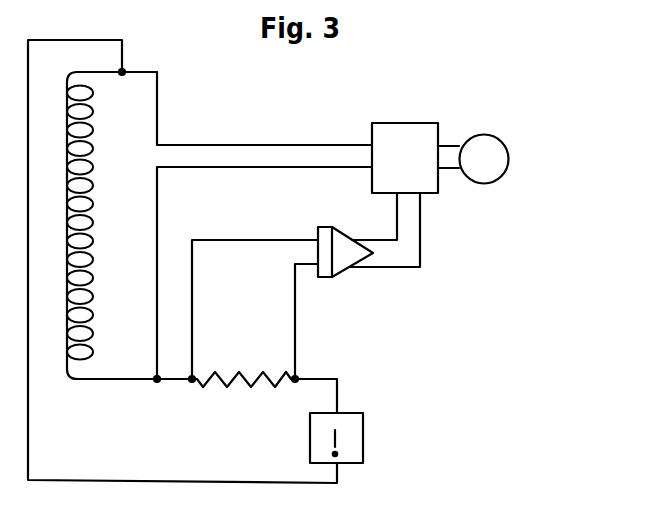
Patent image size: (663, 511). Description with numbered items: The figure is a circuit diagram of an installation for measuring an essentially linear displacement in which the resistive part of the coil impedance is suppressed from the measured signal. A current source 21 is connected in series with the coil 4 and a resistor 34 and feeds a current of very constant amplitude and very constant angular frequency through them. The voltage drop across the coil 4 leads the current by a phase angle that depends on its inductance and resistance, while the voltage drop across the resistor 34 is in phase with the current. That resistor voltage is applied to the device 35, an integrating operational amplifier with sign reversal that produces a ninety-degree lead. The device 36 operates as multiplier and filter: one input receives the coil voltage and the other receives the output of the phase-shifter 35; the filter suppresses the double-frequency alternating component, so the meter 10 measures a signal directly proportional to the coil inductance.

The coil 4 is at (103, 192).
The meter 10 is at (495, 172).
The current source 21 is at (357, 447).
The resistor 34 is at (237, 387).
The device producing a 90° phase shift 35 is at (342, 260).
The device operating as multiplier and filter 36 is at (397, 128).